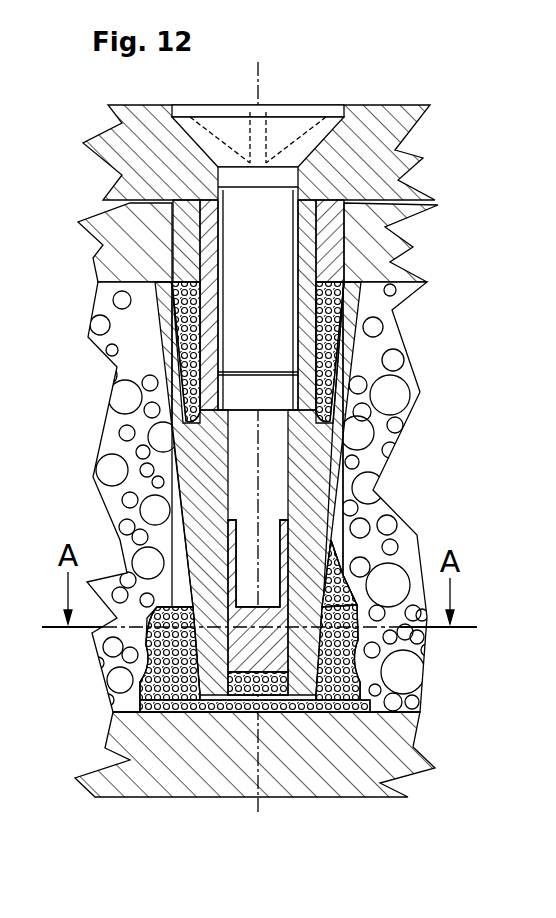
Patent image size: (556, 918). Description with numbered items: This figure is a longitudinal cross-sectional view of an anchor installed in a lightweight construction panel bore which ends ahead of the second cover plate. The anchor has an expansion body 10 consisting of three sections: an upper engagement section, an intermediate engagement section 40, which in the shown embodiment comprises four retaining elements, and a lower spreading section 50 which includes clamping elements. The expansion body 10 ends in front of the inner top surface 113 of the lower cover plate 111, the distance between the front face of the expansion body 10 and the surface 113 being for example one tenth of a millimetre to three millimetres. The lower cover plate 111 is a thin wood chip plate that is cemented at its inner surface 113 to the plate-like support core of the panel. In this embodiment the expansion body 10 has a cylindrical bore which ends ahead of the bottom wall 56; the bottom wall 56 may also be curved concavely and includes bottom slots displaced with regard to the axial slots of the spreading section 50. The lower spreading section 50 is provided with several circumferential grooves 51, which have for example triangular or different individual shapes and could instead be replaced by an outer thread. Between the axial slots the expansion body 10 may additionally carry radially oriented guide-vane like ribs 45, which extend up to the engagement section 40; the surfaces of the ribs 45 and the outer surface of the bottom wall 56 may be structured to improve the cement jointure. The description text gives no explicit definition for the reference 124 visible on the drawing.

The expansion body 10 is at (310, 465).
The engagement section 40 is at (350, 433).
The guide-vane like ribs 45 is at (333, 527).
The spreading section 50 is at (330, 582).
The circumferential grooves 51 is at (360, 657).
The bottom wall 56 is at (362, 690).
The lower cover plate 111 is at (362, 746).
The inner top surface 113 is at (347, 713).
The borehole wall 124 is at (337, 543).